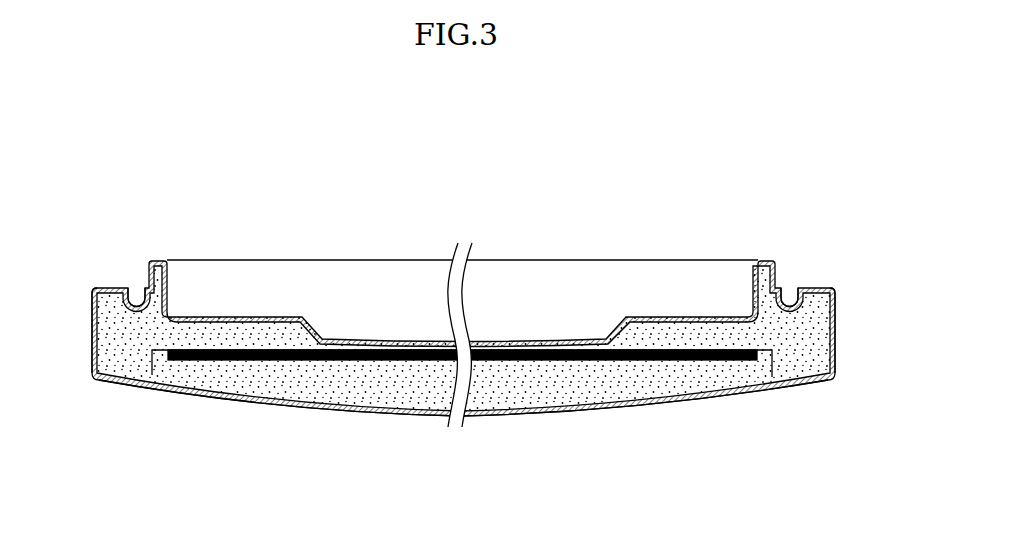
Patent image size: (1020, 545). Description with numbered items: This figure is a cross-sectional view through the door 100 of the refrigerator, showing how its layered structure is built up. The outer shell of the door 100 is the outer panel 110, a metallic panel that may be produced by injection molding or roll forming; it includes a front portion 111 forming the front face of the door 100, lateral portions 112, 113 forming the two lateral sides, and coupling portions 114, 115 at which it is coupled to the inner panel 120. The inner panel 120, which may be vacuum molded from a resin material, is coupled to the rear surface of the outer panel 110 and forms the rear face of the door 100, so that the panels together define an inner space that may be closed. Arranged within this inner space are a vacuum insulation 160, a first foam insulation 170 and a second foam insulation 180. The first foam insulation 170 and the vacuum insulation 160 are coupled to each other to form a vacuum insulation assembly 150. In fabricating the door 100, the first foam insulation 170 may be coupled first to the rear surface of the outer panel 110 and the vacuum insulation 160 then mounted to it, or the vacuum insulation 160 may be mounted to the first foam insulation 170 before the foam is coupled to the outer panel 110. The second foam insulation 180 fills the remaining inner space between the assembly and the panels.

The door 100 is at (431, 149).
The outer panel 110 is at (290, 406).
The front portion 111 is at (222, 394).
The lateral portion 112 is at (836, 337).
The lateral portion 113 is at (92, 338).
The coupling portion 114 is at (812, 289).
The coupling portion 115 is at (105, 288).
The inner panel 120 is at (284, 321).
The vacuum insulation assembly 150 is at (578, 467).
The vacuum insulation 160 is at (650, 362).
The first foam insulation 170 is at (603, 388).
The second foam insulation 180 is at (787, 386).